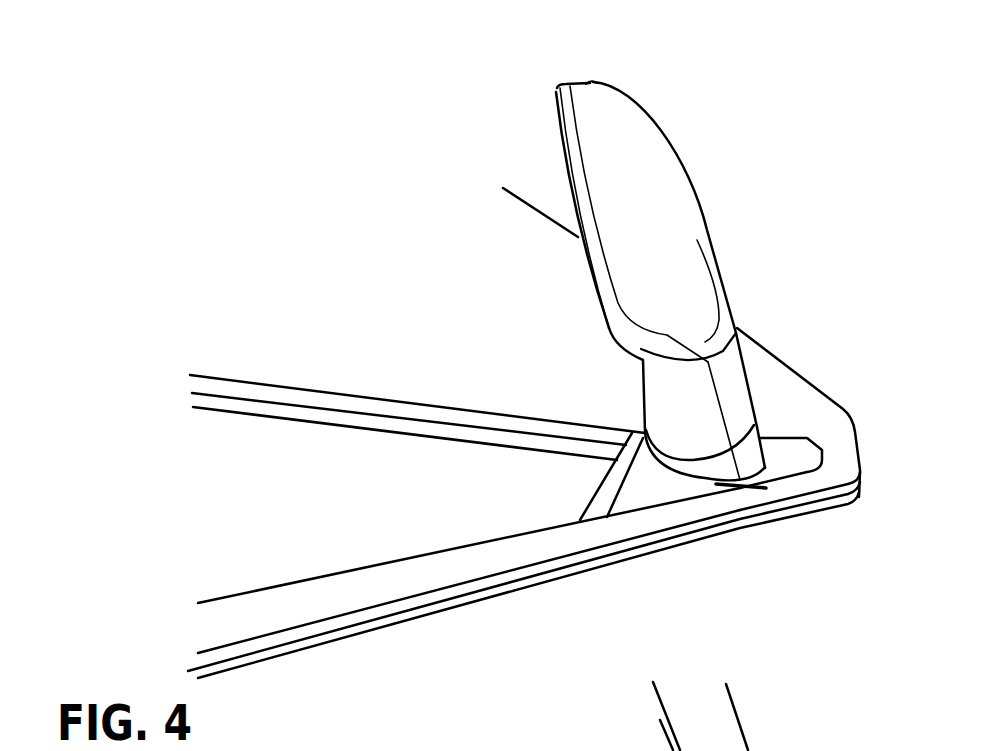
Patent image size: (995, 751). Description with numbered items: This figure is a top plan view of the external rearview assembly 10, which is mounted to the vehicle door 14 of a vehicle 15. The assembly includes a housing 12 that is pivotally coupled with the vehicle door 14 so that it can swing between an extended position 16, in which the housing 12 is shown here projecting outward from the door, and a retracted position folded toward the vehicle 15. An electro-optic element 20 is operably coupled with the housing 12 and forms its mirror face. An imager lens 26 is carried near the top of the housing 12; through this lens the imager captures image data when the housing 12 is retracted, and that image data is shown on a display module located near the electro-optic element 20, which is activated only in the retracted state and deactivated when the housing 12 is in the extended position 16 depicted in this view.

The external rearview assembly 10 is at (715, 61).
The housing 12 is at (637, 160).
The vehicle door 14 is at (495, 330).
The vehicle 15 is at (545, 574).
The extended position 16 is at (759, 256).
The electro-optic element 20 is at (570, 180).
The imager lens 26 is at (590, 82).